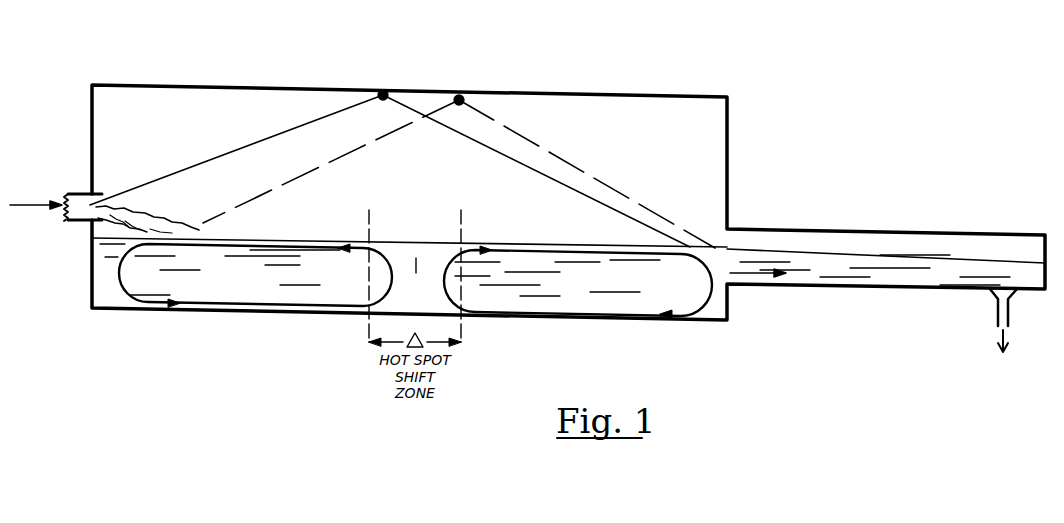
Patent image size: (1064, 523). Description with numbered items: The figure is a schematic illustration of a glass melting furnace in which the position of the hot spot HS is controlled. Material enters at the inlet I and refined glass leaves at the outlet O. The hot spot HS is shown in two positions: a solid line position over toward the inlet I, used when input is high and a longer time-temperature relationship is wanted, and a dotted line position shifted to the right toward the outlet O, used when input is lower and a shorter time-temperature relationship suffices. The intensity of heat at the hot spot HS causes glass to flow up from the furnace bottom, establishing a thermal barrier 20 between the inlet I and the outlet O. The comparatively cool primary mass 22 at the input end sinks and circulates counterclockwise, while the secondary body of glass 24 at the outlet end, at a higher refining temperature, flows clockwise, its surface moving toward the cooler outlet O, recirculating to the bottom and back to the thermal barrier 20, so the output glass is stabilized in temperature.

The thermal barrier 20 is at (410, 281).
The primary mass 22 is at (307, 294).
The secondary body of glass 24 is at (665, 294).
The hot spot HS is at (383, 95).
The inlet I is at (36, 191).
The outlet O is at (754, 214).